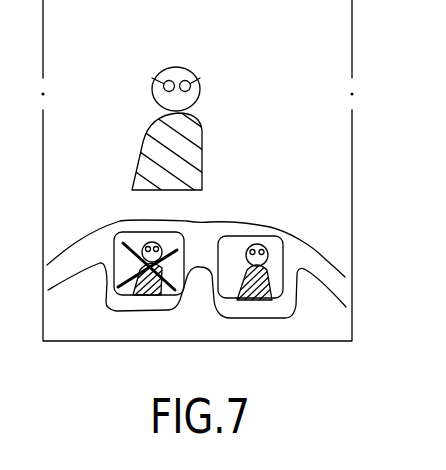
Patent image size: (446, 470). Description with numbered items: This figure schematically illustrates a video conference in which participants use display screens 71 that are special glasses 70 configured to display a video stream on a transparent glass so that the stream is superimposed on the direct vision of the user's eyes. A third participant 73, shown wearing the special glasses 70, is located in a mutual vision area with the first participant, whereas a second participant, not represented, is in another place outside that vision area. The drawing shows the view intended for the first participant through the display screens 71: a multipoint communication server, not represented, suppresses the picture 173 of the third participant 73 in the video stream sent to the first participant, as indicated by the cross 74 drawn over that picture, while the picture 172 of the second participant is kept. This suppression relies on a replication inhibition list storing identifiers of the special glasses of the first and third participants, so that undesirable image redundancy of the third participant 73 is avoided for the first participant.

The special glasses 70 is at (157, 79).
The third participant 73 is at (203, 151).
The cross 74 is at (113, 240).
The display screen 71 is at (106, 306).
The picture of the third participant 173 is at (147, 297).
The picture of the second participant 172 is at (270, 297).